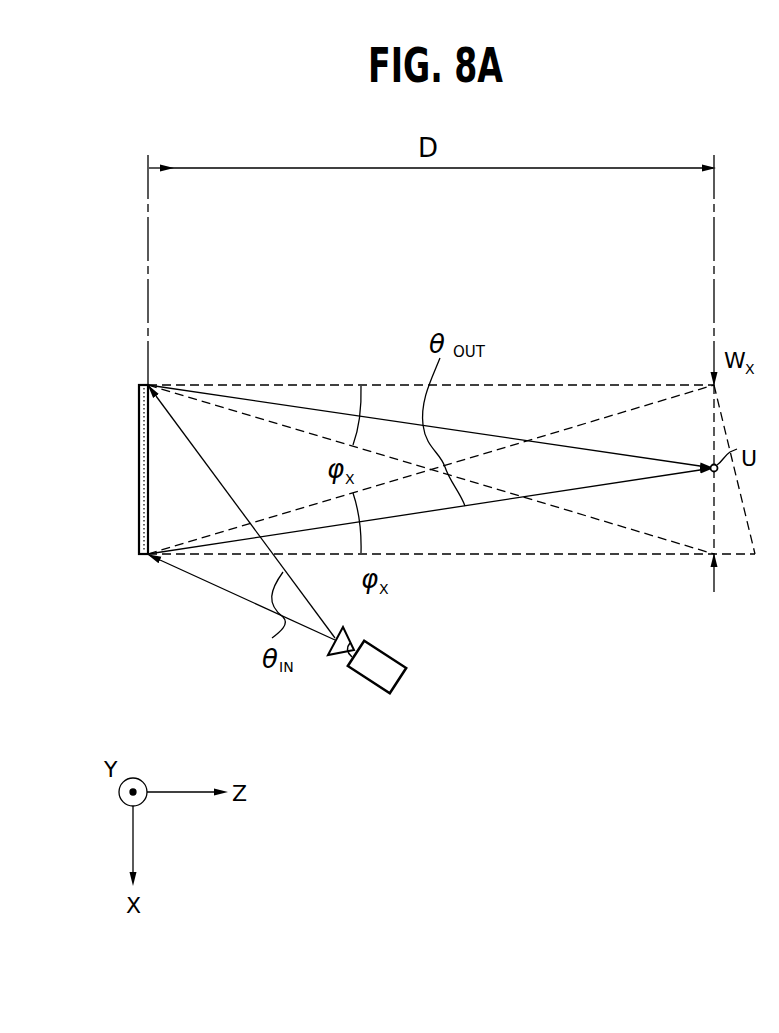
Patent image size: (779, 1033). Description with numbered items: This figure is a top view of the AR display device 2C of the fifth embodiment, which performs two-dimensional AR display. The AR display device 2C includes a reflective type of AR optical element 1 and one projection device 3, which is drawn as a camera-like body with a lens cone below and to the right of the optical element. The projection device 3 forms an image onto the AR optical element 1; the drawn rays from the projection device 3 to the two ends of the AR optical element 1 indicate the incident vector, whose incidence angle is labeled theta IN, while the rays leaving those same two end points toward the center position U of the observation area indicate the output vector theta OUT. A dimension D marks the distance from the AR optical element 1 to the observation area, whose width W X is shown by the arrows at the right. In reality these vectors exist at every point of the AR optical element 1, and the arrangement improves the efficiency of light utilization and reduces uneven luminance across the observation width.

The AR optical element 1 is at (139, 469).
The AR display device 2C is at (124, 350).
The projection device 3 is at (405, 678).